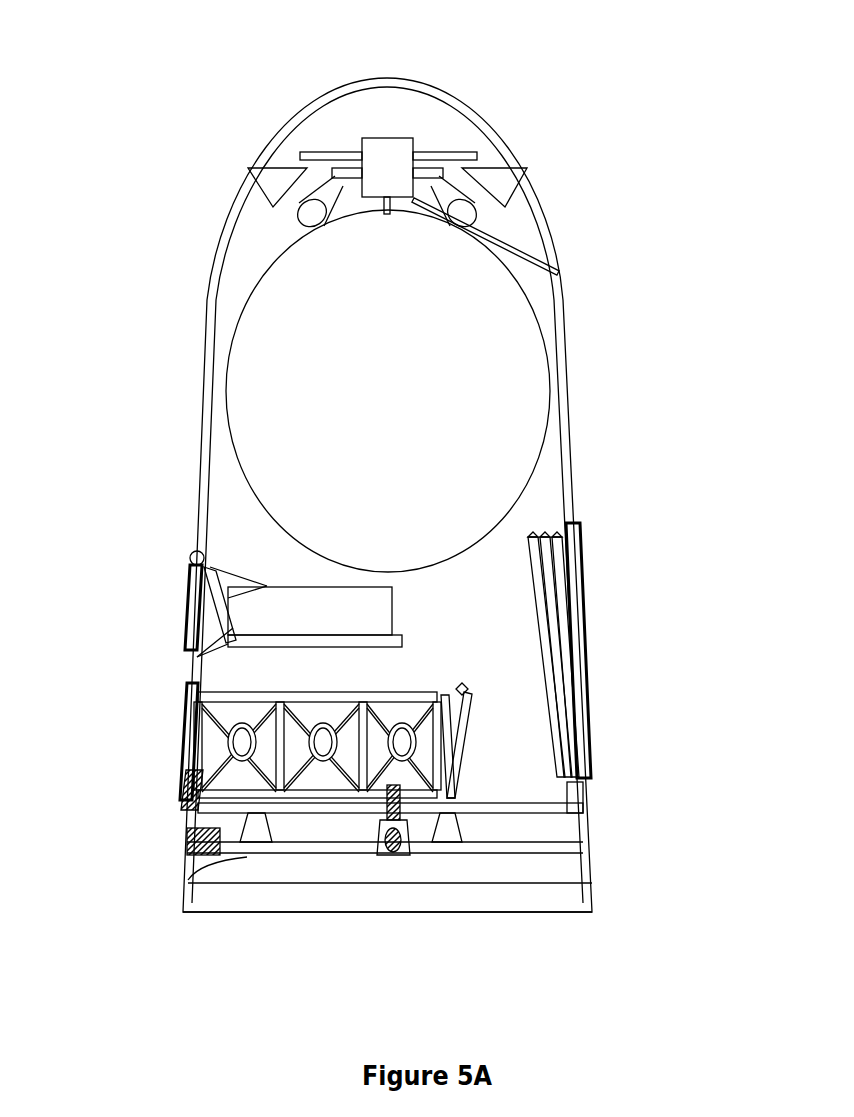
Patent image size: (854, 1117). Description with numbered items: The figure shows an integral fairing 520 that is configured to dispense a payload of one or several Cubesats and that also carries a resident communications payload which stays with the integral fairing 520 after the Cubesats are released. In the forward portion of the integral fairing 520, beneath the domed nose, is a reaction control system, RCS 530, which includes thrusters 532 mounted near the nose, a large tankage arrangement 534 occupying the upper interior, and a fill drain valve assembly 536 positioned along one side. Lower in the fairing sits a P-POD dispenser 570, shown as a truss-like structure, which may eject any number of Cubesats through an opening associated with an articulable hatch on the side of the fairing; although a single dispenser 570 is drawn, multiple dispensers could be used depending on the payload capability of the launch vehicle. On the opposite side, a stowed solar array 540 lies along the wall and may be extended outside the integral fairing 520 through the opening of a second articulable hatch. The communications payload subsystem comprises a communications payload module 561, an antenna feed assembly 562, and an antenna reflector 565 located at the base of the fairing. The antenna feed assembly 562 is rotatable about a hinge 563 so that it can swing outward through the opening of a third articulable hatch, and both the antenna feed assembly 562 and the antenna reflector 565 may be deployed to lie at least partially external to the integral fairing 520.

The integral fairing 520 is at (255, 70).
The RCS 530 is at (584, 192).
The thrusters 532 is at (242, 202).
The tankage arrangement 534 is at (242, 393).
The fill drain valve assembly 536 is at (562, 268).
The solar array 540 is at (572, 570).
The communications payload module 561 is at (315, 617).
The antenna feed assembly 562 is at (195, 550).
The hinge 563 is at (190, 565).
The antenna reflector 565 is at (540, 875).
The P-POD dispenser 570 is at (388, 695).